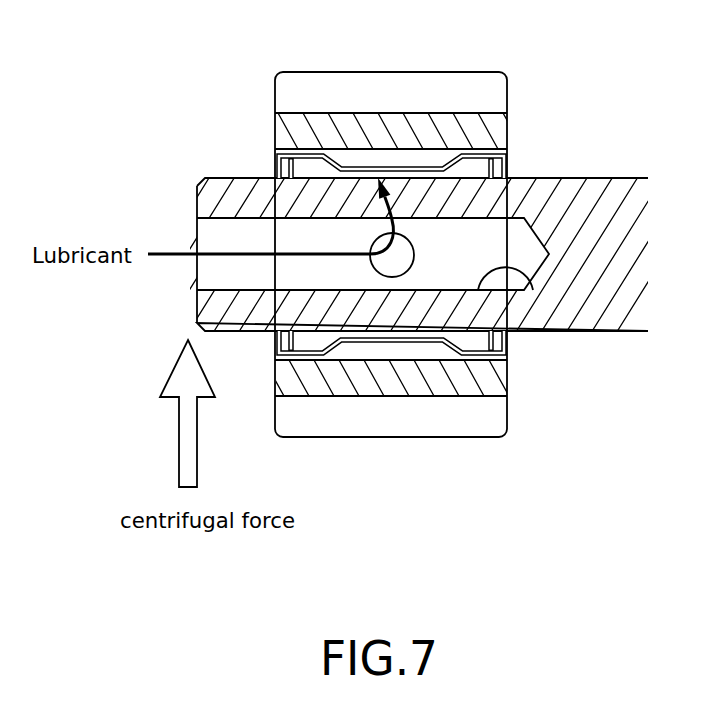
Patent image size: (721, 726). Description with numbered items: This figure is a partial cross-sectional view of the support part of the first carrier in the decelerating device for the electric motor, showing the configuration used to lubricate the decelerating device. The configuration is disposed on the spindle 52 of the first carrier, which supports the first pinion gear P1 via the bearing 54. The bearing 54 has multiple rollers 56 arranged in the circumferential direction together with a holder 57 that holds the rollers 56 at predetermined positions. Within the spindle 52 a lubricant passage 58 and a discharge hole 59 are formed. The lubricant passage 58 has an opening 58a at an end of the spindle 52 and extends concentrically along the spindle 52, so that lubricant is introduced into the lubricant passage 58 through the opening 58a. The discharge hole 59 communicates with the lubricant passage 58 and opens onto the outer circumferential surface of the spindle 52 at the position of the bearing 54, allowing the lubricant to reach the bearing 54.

The spindle 52 is at (600, 187).
The bearing 54 is at (265, 153).
The rollers 56 is at (373, 158).
The holder 57 is at (477, 150).
The lubricant passage 58 is at (528, 279).
The opening 58a is at (197, 235).
The discharge hole 59 is at (417, 276).
The first pinion gear P1 is at (278, 72).